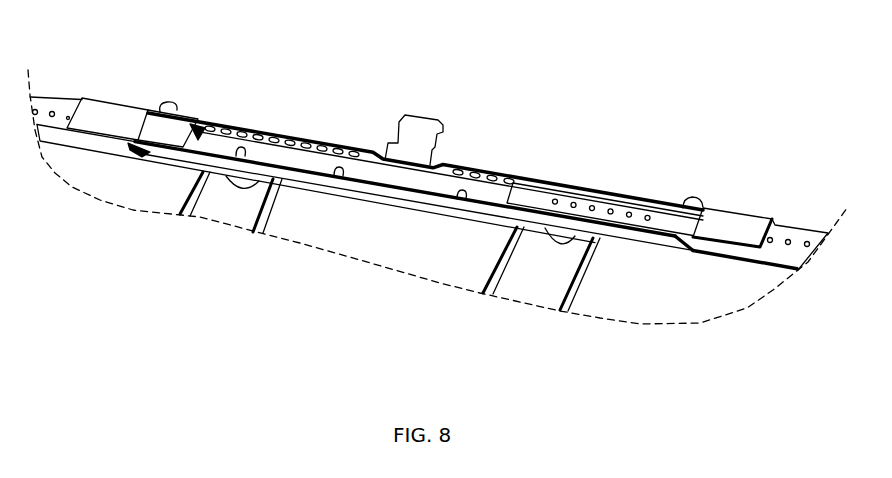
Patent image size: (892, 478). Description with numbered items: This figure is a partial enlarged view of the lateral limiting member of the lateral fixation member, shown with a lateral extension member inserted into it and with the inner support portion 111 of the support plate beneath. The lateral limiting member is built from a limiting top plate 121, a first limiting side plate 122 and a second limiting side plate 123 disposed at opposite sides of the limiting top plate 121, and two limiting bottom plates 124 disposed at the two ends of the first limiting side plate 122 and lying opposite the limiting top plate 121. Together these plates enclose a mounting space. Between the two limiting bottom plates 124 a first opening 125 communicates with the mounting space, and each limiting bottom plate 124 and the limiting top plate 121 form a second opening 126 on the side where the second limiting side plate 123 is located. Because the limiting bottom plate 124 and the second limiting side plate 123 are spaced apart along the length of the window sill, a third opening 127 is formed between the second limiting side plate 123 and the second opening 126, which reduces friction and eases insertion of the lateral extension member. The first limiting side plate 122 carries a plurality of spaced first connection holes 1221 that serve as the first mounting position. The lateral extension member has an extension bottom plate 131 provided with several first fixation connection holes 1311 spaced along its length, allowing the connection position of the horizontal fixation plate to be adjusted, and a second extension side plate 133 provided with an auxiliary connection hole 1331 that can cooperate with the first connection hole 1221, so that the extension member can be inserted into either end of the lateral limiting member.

The inner support portion 111 is at (540, 277).
The limiting top plate 121 is at (268, 157).
The first connection hole 1221 is at (330, 148).
The first limiting side plate 122 is at (470, 167).
The second limiting side plate 123 is at (372, 193).
The limiting bottom plate 124 is at (105, 125).
The first opening 125 is at (300, 164).
The second opening 126 is at (727, 258).
The third opening 127 is at (691, 249).
The extension bottom plate 131 is at (543, 197).
The first fixation connection hole 1311 is at (52, 112).
The second extension side plate 133 is at (100, 145).
The auxiliary connection hole 1331 is at (135, 152).